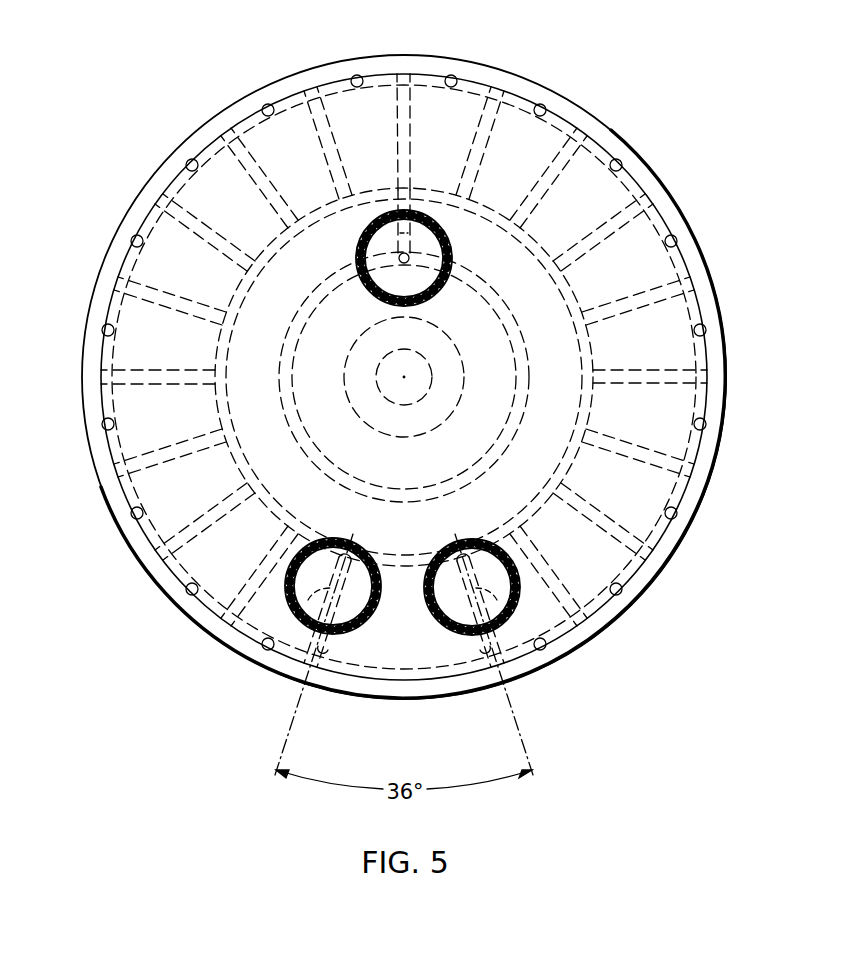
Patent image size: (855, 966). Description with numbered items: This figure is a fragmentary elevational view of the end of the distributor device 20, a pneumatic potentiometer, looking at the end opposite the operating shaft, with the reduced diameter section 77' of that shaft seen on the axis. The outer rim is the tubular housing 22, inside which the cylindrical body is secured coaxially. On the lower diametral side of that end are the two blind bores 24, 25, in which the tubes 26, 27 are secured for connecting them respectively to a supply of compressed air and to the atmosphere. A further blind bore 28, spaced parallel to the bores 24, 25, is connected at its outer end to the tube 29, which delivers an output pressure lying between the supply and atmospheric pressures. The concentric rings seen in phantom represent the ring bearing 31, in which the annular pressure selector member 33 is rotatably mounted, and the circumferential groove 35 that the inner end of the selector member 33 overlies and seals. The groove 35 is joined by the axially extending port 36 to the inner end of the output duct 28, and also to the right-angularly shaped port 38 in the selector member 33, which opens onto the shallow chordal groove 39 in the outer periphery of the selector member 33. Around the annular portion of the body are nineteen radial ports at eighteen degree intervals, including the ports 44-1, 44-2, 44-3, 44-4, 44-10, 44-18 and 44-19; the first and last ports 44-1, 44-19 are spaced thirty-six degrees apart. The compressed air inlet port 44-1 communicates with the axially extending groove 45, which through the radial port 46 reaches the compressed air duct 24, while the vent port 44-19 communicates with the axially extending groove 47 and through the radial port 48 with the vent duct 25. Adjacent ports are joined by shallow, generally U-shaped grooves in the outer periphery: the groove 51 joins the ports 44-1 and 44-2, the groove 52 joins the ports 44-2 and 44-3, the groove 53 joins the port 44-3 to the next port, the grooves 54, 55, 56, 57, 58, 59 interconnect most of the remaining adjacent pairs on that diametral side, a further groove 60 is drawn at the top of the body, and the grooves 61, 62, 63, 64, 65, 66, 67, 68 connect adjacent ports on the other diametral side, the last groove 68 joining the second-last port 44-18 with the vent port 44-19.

The distributor device 20 is at (680, 186).
The tubular housing 22 is at (610, 132).
The blind bore 24 is at (330, 546).
The blind bore 25 is at (484, 546).
The tube 26 is at (289, 602).
The tube 27 is at (516, 607).
The blind bore 28 is at (430, 246).
The tube 29 is at (357, 250).
The ring bearing 31 is at (572, 300).
The pressure selector member 33 is at (592, 404).
The circumferential groove 35 is at (524, 399).
The axially extending port 36 is at (400, 263).
The right-angularly shaped port 38 is at (378, 233).
The chordal groove 39 is at (412, 200).
The radial port 44-1 is at (295, 678).
The radial port 44-2 is at (223, 628).
The radial port 44-3 is at (156, 552).
The radial port 44-4 is at (119, 467).
The radial port 44-10 is at (408, 70).
The radial port 44-18 is at (585, 628).
The radial port 44-19 is at (512, 680).
The axially extending groove 45 is at (306, 683).
The radial port 46 is at (330, 645).
The axially extending groove 47 is at (492, 683).
The radial port 48 is at (477, 645).
The U-shaped groove 51 is at (263, 648).
The U-shaped groove 52 is at (187, 592).
The U-shaped groove 53 is at (131, 513).
The U-shaped groove 54 is at (103, 426).
The U-shaped groove 55 is at (102, 329).
The U-shaped groove 56 is at (131, 239).
The U-shaped groove 57 is at (188, 160).
The U-shaped groove 58 is at (264, 104).
The U-shaped groove 59 is at (357, 74).
The hole 60 is at (452, 74).
The U-shaped groove 61 is at (545, 104).
The U-shaped groove 62 is at (622, 160).
The U-shaped groove 63 is at (677, 241).
The U-shaped groove 64 is at (706, 329).
The U-shaped groove 65 is at (706, 422).
The U-shaped groove 66 is at (677, 513).
The U-shaped groove 67 is at (621, 592).
The U-shaped groove 68 is at (545, 648).
The reduced diameter section 77' is at (436, 369).